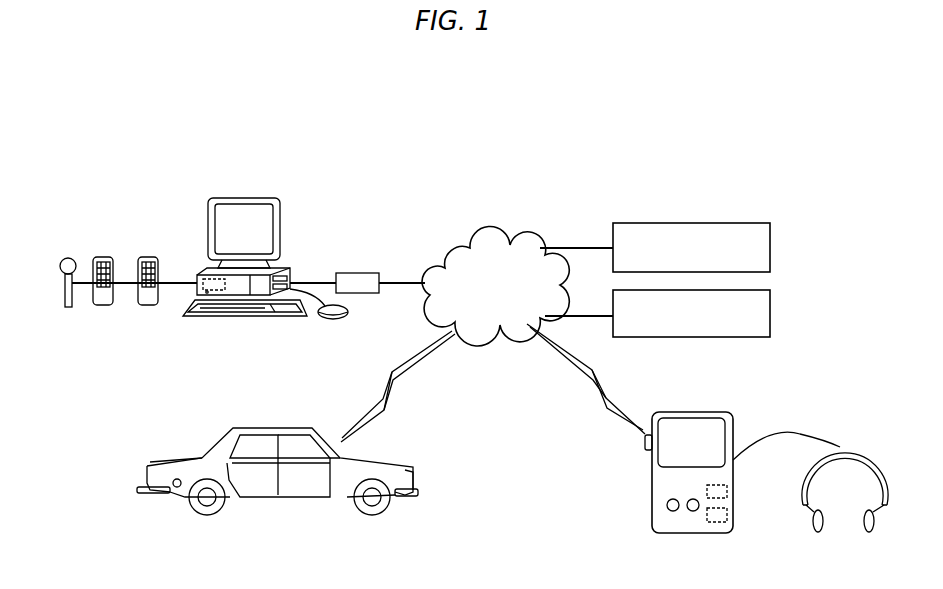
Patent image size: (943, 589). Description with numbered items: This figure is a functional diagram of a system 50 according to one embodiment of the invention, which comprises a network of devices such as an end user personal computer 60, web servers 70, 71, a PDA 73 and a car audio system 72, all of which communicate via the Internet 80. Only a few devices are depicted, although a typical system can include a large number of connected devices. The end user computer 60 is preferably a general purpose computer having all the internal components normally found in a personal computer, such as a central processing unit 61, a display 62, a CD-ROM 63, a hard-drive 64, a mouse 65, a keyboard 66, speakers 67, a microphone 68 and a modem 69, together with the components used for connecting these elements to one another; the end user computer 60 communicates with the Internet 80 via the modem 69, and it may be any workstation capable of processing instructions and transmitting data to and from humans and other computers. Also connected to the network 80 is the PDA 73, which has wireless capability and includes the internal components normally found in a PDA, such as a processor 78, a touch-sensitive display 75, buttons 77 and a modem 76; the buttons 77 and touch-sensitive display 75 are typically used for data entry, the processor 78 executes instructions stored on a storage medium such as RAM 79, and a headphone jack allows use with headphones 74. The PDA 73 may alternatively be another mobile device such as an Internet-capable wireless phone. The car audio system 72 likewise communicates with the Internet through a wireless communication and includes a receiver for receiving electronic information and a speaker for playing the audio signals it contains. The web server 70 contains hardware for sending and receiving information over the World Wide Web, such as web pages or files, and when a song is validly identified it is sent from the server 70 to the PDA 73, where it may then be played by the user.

The system 50 is at (483, 122).
The end user personal computer 60 is at (275, 181).
The central processing unit 61 is at (202, 262).
The display 62 is at (240, 205).
The CD-ROM 63 is at (285, 274).
The hard-drive 64 is at (289, 278).
The mouse 65 is at (332, 321).
The keyboard 66 is at (225, 318).
The speakers 67 is at (121, 243).
The microphone 68 is at (68, 309).
The modem 69 is at (373, 296).
The web server 70 is at (771, 243).
The web server 71 is at (771, 310).
The car audio system 72 is at (297, 503).
The PDA 73 is at (790, 393).
The headphones 74 is at (840, 446).
The touch-sensitive display 75 is at (690, 420).
The modem 76 is at (644, 450).
The buttons 77 is at (668, 510).
The processor 78 is at (738, 488).
The RAM 79 is at (738, 511).
The Internet 80 is at (490, 236).